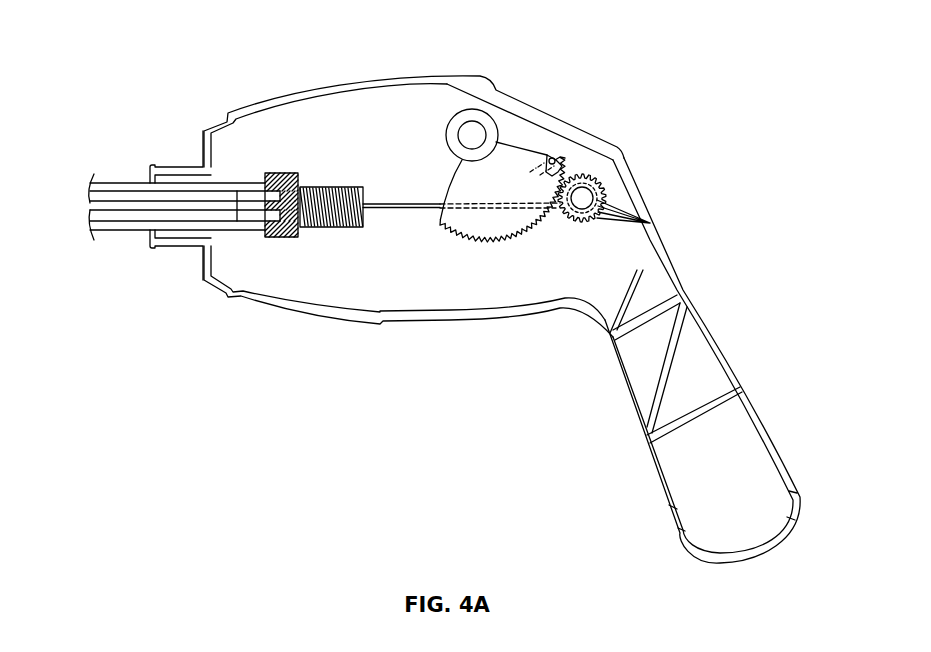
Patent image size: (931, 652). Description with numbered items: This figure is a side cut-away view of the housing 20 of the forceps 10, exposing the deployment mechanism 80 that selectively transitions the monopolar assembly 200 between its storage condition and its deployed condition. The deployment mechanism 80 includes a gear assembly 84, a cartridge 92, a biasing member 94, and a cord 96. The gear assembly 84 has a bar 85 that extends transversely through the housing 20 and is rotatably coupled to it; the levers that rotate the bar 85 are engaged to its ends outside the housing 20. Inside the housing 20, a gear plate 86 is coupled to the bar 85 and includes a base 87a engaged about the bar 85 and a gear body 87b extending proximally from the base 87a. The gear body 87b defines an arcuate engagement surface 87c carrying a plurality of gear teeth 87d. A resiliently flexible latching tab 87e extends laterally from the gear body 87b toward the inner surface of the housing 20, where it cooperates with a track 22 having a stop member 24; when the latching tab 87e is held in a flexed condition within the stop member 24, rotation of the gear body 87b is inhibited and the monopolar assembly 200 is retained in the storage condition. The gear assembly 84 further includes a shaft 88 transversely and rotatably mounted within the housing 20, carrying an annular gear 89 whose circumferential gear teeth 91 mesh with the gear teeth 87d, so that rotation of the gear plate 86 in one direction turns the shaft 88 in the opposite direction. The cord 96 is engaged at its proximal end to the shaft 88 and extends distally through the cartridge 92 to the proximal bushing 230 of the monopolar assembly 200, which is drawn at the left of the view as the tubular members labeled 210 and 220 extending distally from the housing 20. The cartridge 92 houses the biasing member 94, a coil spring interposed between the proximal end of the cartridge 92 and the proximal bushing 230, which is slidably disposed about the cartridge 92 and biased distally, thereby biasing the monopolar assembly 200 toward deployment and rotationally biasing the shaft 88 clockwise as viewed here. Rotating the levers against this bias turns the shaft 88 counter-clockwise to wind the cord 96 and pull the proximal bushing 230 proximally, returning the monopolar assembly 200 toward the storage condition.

The forceps 10 is at (258, 80).
The housing 20 is at (640, 197).
The track 22 is at (548, 145).
The stop member 24 is at (552, 157).
The deployment mechanism 80 is at (427, 158).
The gear assembly 84 is at (497, 247).
The bar 85 is at (472, 136).
The gear plate 86 is at (503, 135).
The base 87a is at (456, 152).
The gear body 87b is at (519, 153).
The arcuate engagement surface 87c is at (527, 236).
The gear teeth 87d is at (478, 238).
The latching tab 87e is at (552, 150).
The shaft 88 is at (582, 198).
The annular gear 89 is at (584, 222).
The gear teeth 91 is at (650, 223).
The cartridge 92 is at (352, 229).
The biasing member 94 is at (328, 187).
The cord 96 is at (401, 209).
The monopolar assembly 200 is at (226, 241).
The inner tube 210 is at (127, 231).
The outer tube 220 is at (122, 183).
The proximal bushing 230 is at (292, 238).